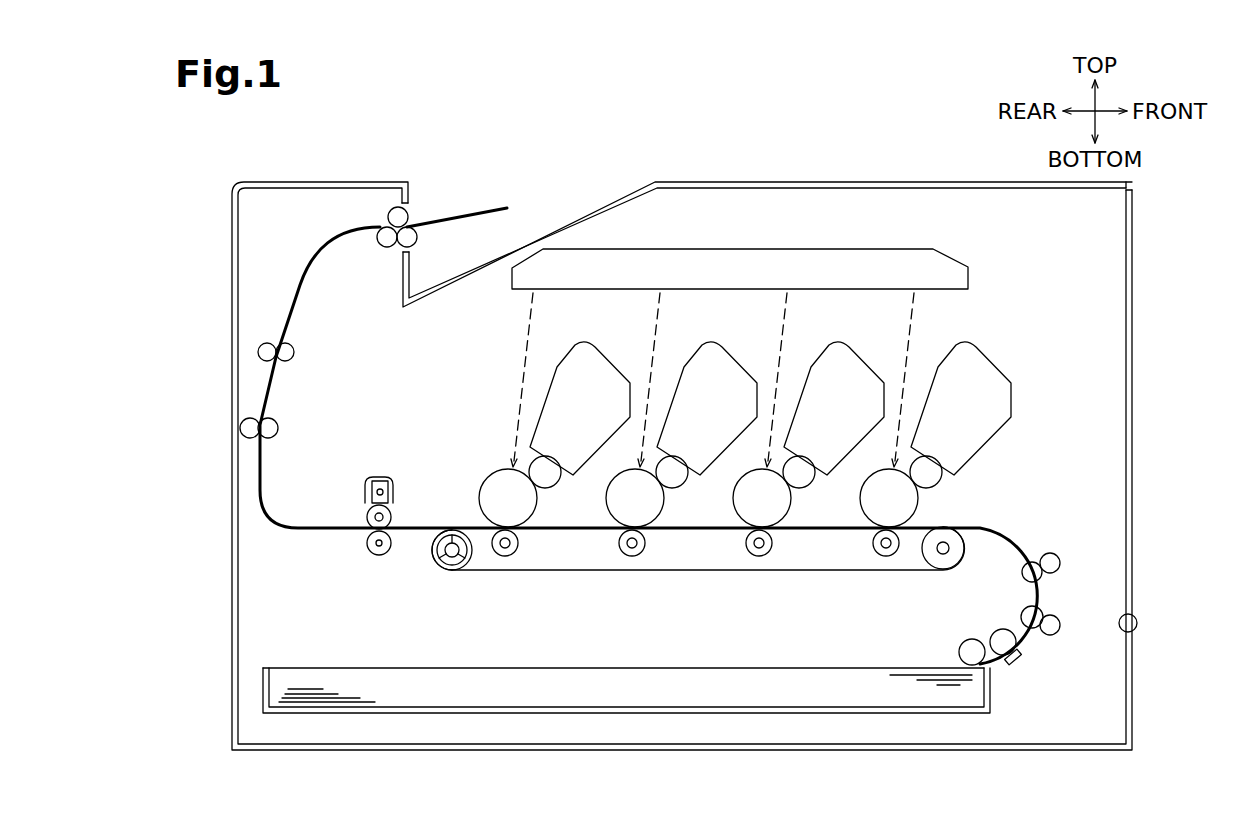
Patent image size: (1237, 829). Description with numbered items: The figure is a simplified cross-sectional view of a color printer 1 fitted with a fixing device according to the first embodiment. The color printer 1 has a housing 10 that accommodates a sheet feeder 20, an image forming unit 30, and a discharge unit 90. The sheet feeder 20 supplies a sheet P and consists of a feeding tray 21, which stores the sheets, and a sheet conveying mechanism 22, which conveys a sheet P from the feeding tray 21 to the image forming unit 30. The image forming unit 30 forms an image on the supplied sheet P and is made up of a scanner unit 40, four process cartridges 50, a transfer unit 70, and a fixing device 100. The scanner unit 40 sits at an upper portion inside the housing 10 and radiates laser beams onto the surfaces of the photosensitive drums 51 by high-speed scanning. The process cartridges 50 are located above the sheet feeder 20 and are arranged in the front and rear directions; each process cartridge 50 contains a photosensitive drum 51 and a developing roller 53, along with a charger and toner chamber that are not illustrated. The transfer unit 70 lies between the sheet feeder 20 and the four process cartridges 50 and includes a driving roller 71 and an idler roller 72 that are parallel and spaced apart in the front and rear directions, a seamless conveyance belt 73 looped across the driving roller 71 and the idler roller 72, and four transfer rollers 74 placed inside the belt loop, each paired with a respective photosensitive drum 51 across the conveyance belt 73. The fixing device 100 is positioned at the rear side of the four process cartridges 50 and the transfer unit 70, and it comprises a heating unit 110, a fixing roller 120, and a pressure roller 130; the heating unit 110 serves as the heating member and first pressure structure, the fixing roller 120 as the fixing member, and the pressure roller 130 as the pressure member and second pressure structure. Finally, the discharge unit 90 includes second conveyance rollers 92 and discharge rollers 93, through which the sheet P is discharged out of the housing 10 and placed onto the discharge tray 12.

The color printer 1 is at (547, 158).
The housing 10 is at (278, 182).
The discharge tray 12 is at (565, 226).
The sheet P is at (345, 227).
The sheet feeder 20 is at (1042, 672).
The feeding tray 21 is at (992, 692).
The sheet conveying mechanism 22 is at (1082, 590).
The image forming unit 30 is at (1012, 265).
The scanner unit 40 is at (768, 249).
The process cartridge 50 is at (608, 360).
The photosensitive drum 51 is at (479, 500).
The developing roller 53 is at (546, 456).
The transfer unit 70 is at (447, 578).
The driving roller 71 is at (472, 570).
The idler roller 72 is at (923, 557).
The conveyance belt 73 is at (508, 571).
The transfer roller 74 is at (519, 543).
The discharge unit 90 is at (263, 239).
The second conveyance rollers 92 is at (258, 352).
The discharge rollers 93 is at (395, 207).
The fixing device 100 is at (412, 468).
The heating unit 110 is at (380, 477).
The fixing roller 120 is at (366, 512).
The pressure roller 130 is at (371, 554).